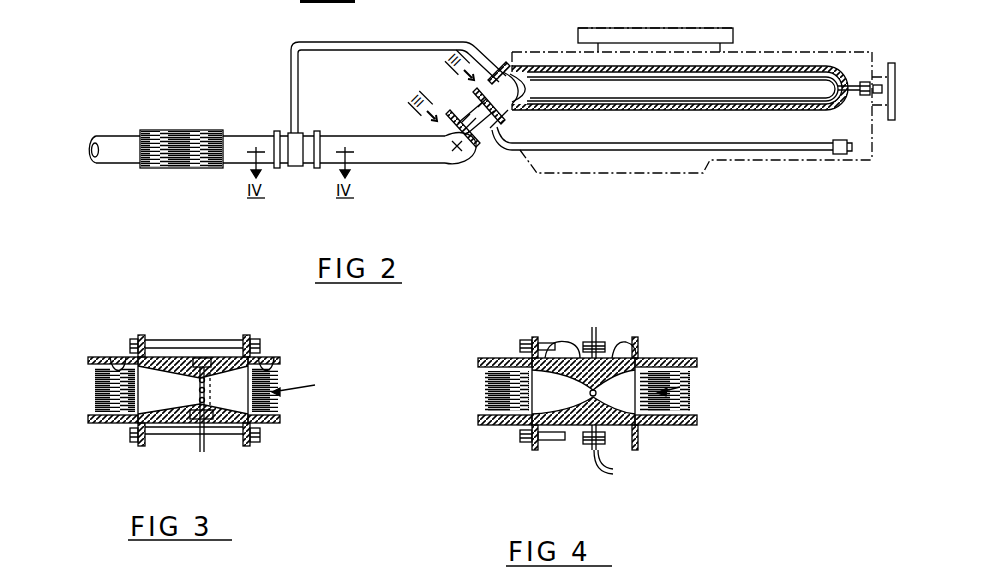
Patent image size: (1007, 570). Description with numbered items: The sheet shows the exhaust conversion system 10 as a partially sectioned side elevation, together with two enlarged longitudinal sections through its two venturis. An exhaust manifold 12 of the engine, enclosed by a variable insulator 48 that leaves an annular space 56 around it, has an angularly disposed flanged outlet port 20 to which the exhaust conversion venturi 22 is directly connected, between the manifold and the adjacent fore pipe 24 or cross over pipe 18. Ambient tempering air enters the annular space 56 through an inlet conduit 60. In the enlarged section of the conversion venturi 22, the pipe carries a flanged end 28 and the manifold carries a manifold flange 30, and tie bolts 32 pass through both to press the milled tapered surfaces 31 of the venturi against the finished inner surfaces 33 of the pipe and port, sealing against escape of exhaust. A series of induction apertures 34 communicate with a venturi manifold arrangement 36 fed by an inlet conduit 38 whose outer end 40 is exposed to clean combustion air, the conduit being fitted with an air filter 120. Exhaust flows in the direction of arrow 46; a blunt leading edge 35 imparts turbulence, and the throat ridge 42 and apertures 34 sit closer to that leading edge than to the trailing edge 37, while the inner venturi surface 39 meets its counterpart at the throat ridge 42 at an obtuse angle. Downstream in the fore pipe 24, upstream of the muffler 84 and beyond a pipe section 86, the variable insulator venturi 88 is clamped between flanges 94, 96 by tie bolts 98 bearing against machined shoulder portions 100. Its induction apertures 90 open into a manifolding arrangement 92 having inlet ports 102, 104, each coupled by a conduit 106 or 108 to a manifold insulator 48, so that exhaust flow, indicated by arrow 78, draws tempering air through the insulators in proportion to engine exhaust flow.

In FIG. 2, the exhaust conversion system 10 is at (463, 165).
In FIG. 2, the exhaust manifold 12 is at (635, 88).
In FIG. 3, the exhaust manifold 12 is at (272, 420).
In FIG. 3, the cross over pipe 18 is at (110, 358).
In FIG. 2, the flanged outlet port 20 is at (662, 133).
In FIG. 3, the flanged outlet port 20 is at (268, 360).
In FIG. 2, the exhaust conversion venturi 22 is at (485, 136).
In FIG. 3, the exhaust conversion venturi 22 is at (153, 428).
In FIG. 2, the fore pipe 24 is at (240, 135).
In FIG. 3, the flanged end 28 is at (151, 343).
In FIG. 3, the manifold flange 30 is at (235, 348).
In FIG. 3, the tapered surfaces 31 is at (237, 417).
In FIG. 3, the tie bolts 32 is at (183, 340).
In FIG. 3, the inner surfaces 33 is at (114, 357).
In FIG. 3, the induction apertures 34 is at (197, 395).
In FIG. 3, the leading edge 35 is at (326, 364).
In FIG. 3, the venturi manifold arrangement 36 is at (203, 363).
In FIG. 3, the trailing edge 37 is at (125, 394).
In FIG. 2, the inlet conduit 38 is at (643, 150).
In FIG. 3, the inlet conduit 38 is at (200, 446).
In FIG. 3, the inner venturi surface 39 is at (137, 410).
In FIG. 2, the outer end 40 is at (853, 153).
In FIG. 3, the throat ridge 42 is at (209, 393).
In FIG. 3, the arrow 46 is at (303, 384).
In FIG. 2, the variable insulator 48 is at (753, 68).
In FIG. 2, the annular space 56 is at (780, 70).
In FIG. 2, the inlet conduit 60 is at (861, 80).
In FIG. 4, the pipe with flow arrow 78 is at (604, 391).
In FIG. 2, the muffler 84 is at (187, 130).
In FIG. 2, the supply pipe 86 is at (114, 135).
In FIG. 2, the variable insulator venturi 88 is at (304, 135).
In FIG. 4, the variable insulator venturi 88 is at (558, 358).
In FIG. 4, the induction apertures 90 is at (570, 428).
In FIG. 4, the manifolding arrangement 92 is at (618, 348).
In FIG. 4, the flange 94 is at (537, 342).
In FIG. 4, the flange 96 is at (640, 347).
In FIG. 4, the tie bolts 98 is at (548, 343).
In FIG. 4, the shoulder portions 100 is at (550, 357).
In FIG. 4, the inlet port 102 is at (583, 445).
In FIG. 4, the inlet port 104 is at (595, 335).
In FIG. 2, the conduit 106 is at (381, 50).
In FIG. 4, the conduit 106 is at (614, 471).
In FIG. 4, the conduit 108 is at (600, 345).
In FIG. 2, the air filter 120 is at (835, 158).